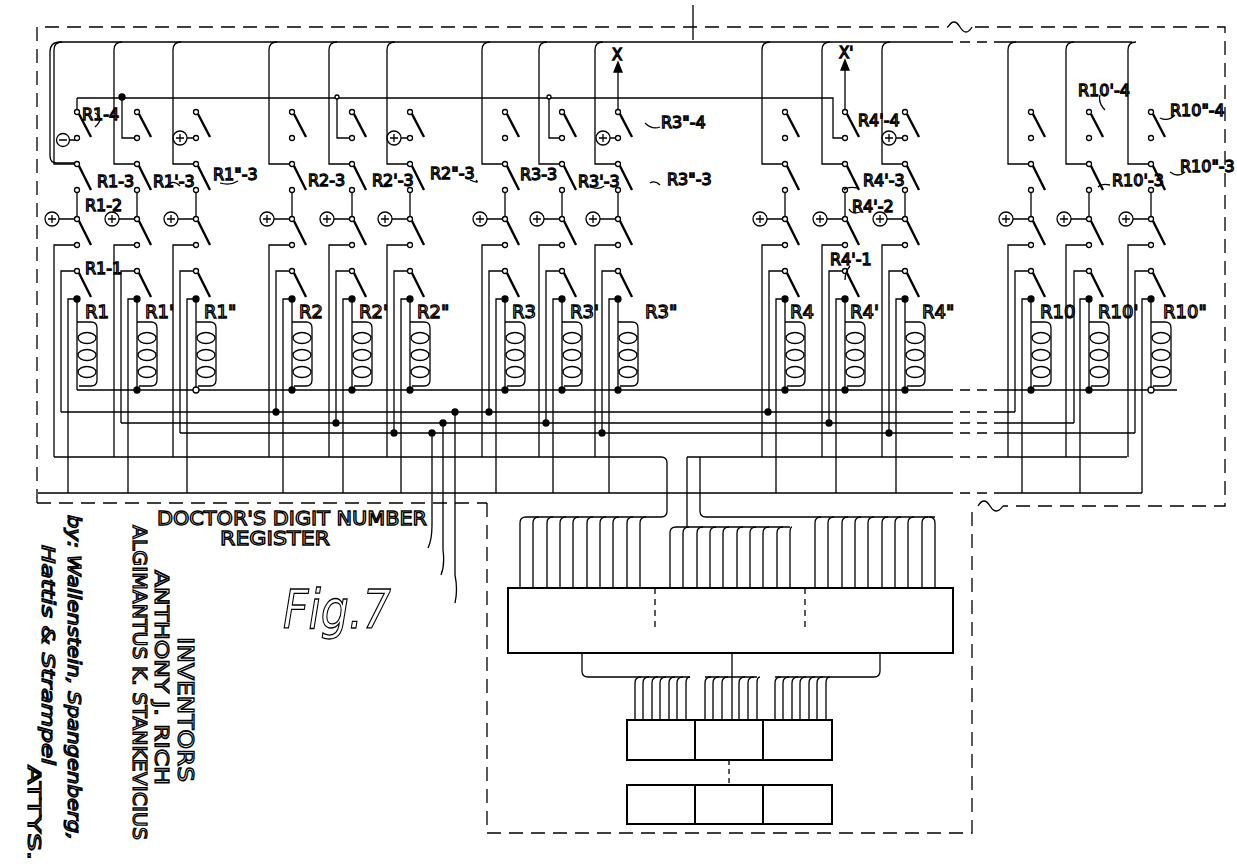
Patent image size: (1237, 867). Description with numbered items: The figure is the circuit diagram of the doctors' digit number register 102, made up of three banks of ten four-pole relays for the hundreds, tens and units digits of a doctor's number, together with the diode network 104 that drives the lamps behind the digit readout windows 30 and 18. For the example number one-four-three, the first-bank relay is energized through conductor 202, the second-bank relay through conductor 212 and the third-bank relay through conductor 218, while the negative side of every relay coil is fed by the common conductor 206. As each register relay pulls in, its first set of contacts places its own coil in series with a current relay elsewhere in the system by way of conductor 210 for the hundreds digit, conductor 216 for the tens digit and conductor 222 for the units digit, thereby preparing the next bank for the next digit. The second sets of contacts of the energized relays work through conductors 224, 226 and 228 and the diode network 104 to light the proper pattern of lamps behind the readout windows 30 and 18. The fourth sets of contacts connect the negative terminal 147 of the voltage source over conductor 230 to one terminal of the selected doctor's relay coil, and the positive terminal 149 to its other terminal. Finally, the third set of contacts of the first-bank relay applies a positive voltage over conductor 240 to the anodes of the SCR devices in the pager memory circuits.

The doctors' digit number register 102 is at (1154, 91).
The diode network 104 is at (962, 615).
The digit readout window 18 is at (834, 722).
The digit readout window 30 is at (834, 799).
The negative voltage terminal 147 is at (63, 133).
The positive terminal 149 is at (628, 141).
The conductor 202 is at (88, 424).
The conductor 206 is at (664, 390).
The conductor 210 is at (82, 250).
The conductor 212 is at (830, 482).
The conductor 216 is at (437, 510).
The conductor 218 is at (612, 465).
The conductor 222 is at (417, 499).
The conductor 224 is at (516, 545).
The conductor 226 is at (713, 535).
The conductor 228 is at (843, 518).
The conductor 230 is at (722, 96).
The conductor 240 is at (52, 64).